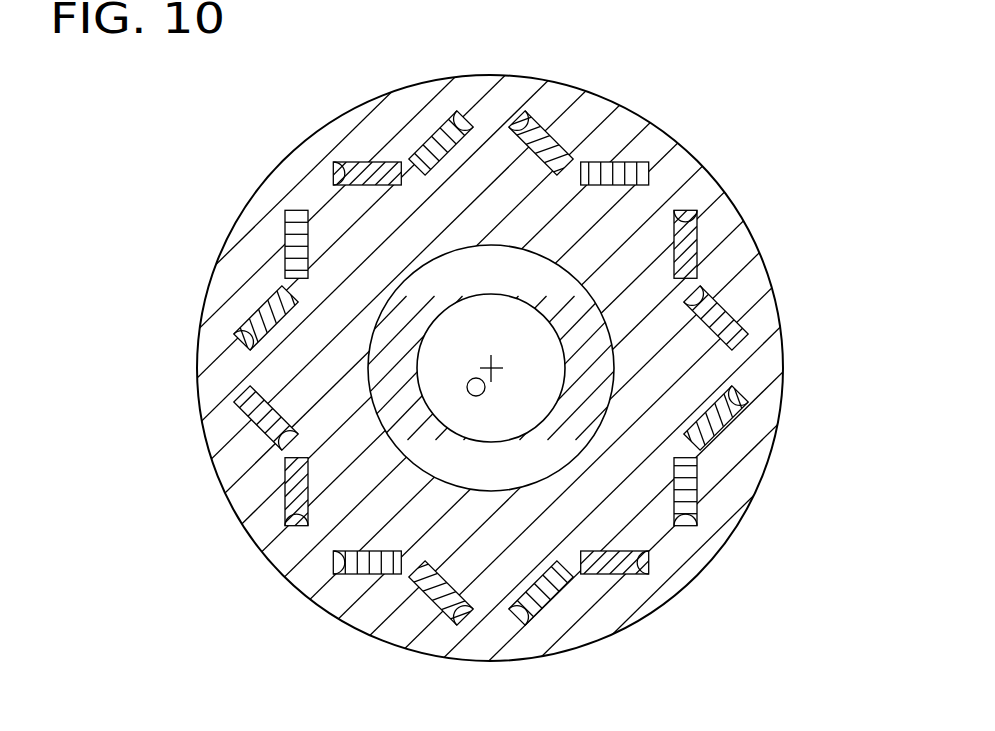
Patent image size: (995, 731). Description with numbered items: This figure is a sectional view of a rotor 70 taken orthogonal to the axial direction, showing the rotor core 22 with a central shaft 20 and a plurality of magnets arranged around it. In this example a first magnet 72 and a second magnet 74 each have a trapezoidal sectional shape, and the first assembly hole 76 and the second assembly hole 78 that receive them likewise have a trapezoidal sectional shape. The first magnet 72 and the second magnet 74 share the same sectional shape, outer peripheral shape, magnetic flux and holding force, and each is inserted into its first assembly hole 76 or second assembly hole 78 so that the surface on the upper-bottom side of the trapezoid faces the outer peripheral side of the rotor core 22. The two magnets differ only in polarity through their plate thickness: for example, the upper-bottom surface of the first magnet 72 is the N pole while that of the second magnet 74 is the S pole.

The rotor 70 is at (714, 109).
The rotor core 22 is at (302, 190).
The shaft 20 is at (590, 382).
The first magnet 72 is at (382, 170).
The first assembly hole 76 is at (338, 183).
The second magnet 74 is at (446, 135).
The second assembly hole 78 is at (474, 128).